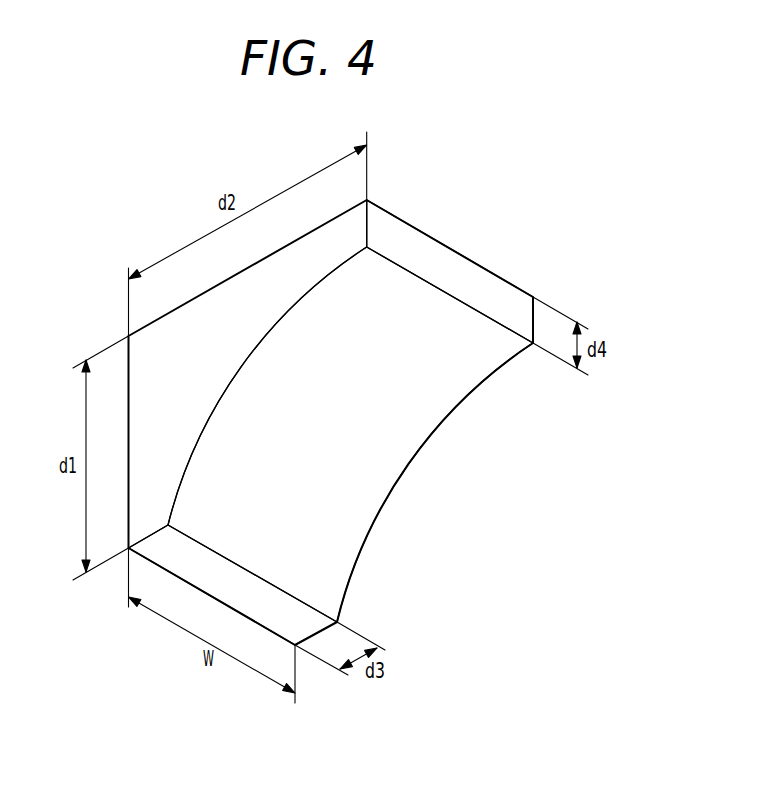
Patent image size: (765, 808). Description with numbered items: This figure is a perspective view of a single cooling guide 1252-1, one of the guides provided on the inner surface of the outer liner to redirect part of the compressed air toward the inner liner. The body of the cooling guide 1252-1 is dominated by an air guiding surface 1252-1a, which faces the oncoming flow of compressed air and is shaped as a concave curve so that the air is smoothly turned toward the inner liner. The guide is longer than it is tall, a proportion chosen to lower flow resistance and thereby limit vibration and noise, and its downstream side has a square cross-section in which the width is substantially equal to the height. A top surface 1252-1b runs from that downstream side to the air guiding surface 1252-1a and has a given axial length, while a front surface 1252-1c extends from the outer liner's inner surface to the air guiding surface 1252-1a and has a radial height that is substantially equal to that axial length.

The cooling guide 1252-1 is at (343, 393).
The air guiding surface 1252-1a is at (375, 442).
The top surface 1252-1b is at (270, 602).
The front surface 1252-1c is at (458, 282).